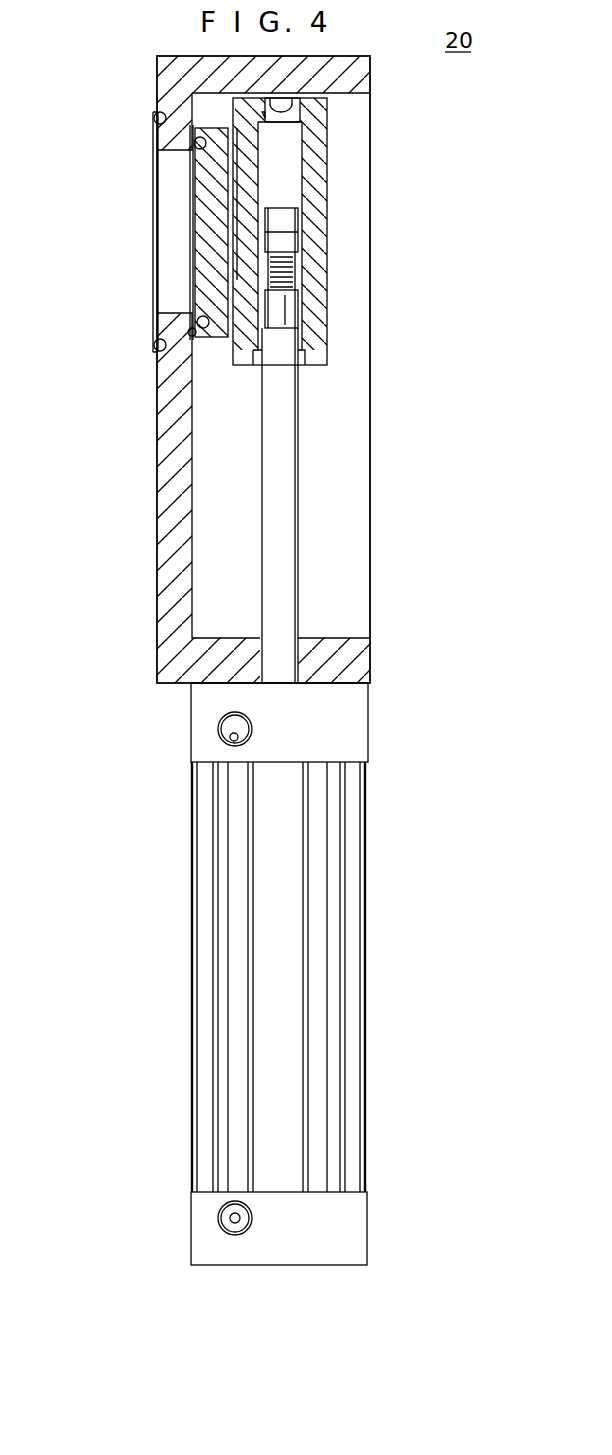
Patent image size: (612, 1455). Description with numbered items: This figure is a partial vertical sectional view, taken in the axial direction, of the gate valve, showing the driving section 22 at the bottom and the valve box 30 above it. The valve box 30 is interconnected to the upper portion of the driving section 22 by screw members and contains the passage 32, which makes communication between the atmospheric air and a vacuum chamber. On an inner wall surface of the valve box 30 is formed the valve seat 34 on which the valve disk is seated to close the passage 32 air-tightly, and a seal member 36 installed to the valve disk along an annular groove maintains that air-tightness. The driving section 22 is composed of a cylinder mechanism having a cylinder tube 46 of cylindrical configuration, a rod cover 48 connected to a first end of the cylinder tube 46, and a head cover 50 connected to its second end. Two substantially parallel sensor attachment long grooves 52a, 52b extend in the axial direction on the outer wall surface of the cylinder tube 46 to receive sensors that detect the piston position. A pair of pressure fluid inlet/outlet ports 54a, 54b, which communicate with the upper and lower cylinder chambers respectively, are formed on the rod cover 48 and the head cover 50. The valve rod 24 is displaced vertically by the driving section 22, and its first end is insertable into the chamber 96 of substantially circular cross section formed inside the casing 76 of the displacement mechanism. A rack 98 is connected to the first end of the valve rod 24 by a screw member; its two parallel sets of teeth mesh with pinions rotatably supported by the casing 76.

The driving section 22 is at (263, 974).
The valve rod 24 is at (280, 440).
The valve box 30 is at (176, 468).
The passage 32 is at (175, 153).
The valve seat 34 is at (186, 332).
The seal member 36 is at (193, 141).
The cylinder tube 46 is at (265, 977).
The rod cover 48 is at (335, 731).
The head cover 50 is at (335, 1222).
The sensor attachment long groove 52a is at (237, 1097).
The sensor attachment long groove 52b is at (320, 1120).
The pressure fluid inlet/outlet port 54a is at (218, 723).
The pressure fluid inlet/outlet port 54b is at (218, 1218).
The casing 76 is at (310, 110).
The chamber 96 is at (283, 169).
The rack 98 is at (297, 272).